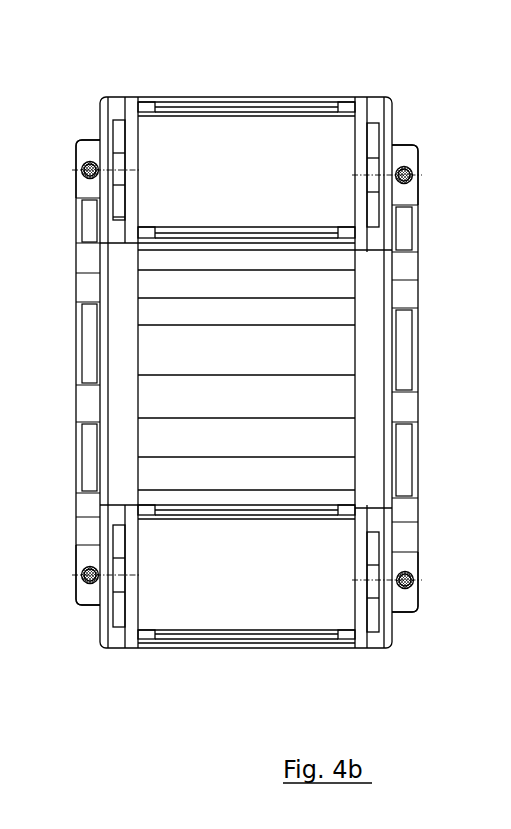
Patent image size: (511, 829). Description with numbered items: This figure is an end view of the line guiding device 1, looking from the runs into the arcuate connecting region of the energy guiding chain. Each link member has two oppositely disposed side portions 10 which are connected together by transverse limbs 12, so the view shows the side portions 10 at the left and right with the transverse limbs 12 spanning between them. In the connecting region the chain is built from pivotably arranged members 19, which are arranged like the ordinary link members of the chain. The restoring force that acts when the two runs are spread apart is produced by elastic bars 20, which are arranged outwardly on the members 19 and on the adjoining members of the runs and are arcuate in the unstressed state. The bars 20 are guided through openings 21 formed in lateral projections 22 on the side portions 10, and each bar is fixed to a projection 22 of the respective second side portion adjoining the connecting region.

The line guiding device 1 is at (438, 261).
The side portion 10 is at (58, 259).
The transverse limb 12 is at (215, 112).
The pivotably arranged member 19 is at (181, 86).
The elastic bar 20 is at (86, 170).
The opening 21 is at (88, 160).
The lateral projection 22 is at (74, 160).